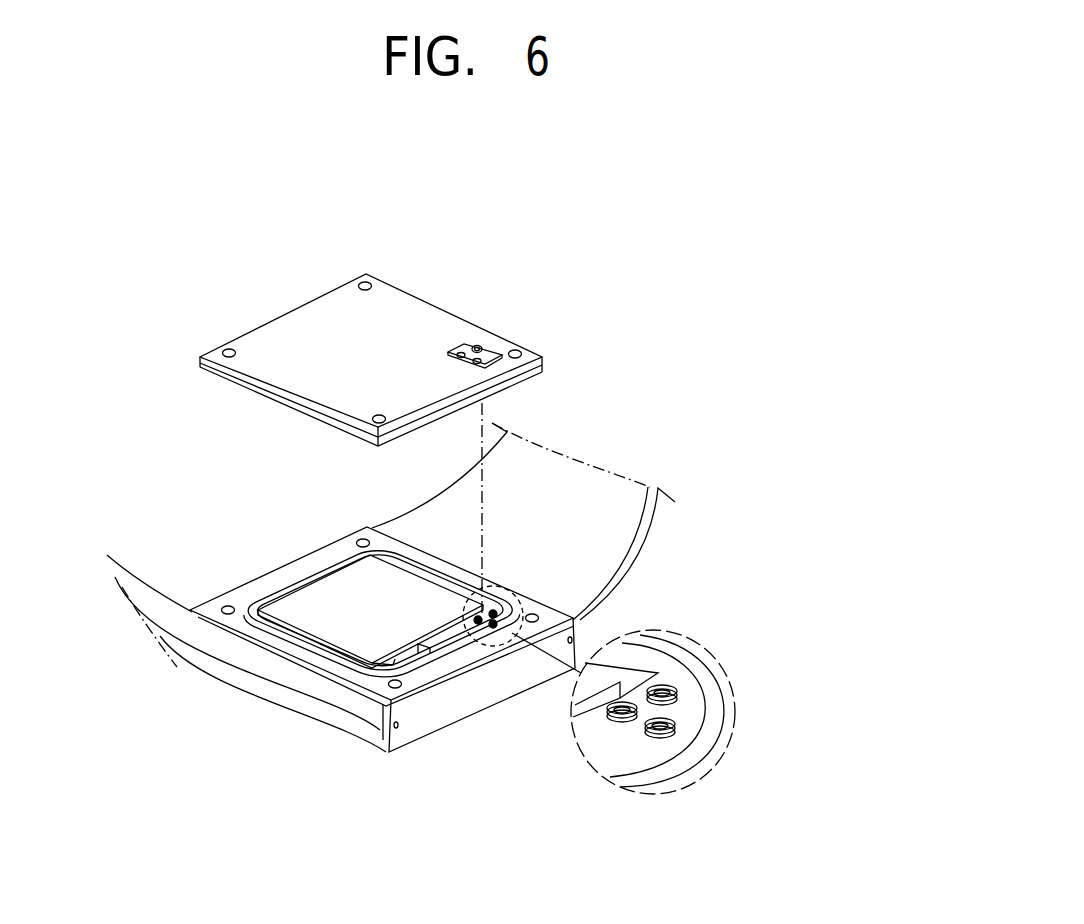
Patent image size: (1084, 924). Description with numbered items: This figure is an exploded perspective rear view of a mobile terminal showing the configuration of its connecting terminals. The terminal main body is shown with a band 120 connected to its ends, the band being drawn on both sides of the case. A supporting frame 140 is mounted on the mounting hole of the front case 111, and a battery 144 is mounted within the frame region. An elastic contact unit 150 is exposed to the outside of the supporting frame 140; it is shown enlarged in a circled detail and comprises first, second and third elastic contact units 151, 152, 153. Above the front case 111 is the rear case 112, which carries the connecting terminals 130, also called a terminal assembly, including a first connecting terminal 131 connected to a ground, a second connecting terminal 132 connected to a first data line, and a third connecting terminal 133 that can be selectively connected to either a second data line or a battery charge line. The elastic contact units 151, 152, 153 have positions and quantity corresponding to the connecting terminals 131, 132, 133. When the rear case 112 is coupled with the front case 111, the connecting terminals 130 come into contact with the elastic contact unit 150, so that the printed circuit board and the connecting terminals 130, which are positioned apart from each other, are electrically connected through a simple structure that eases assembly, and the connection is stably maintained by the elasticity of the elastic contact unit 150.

The front case 111 is at (422, 720).
The rear case 112 is at (295, 330).
The band 120 is at (227, 657).
The connecting terminals 130 is at (545, 229).
The first connecting terminal 131 is at (488, 356).
The second connecting terminal 132 is at (461, 351).
The third connecting terminal 133 is at (477, 345).
The supporting frame 140 is at (318, 575).
The battery 144 is at (307, 610).
The elastic contact unit 150 is at (719, 712).
The first elastic contact unit 151 is at (675, 727).
The second elastic contact unit 152 is at (637, 709).
The third elastic contact unit 153 is at (677, 692).